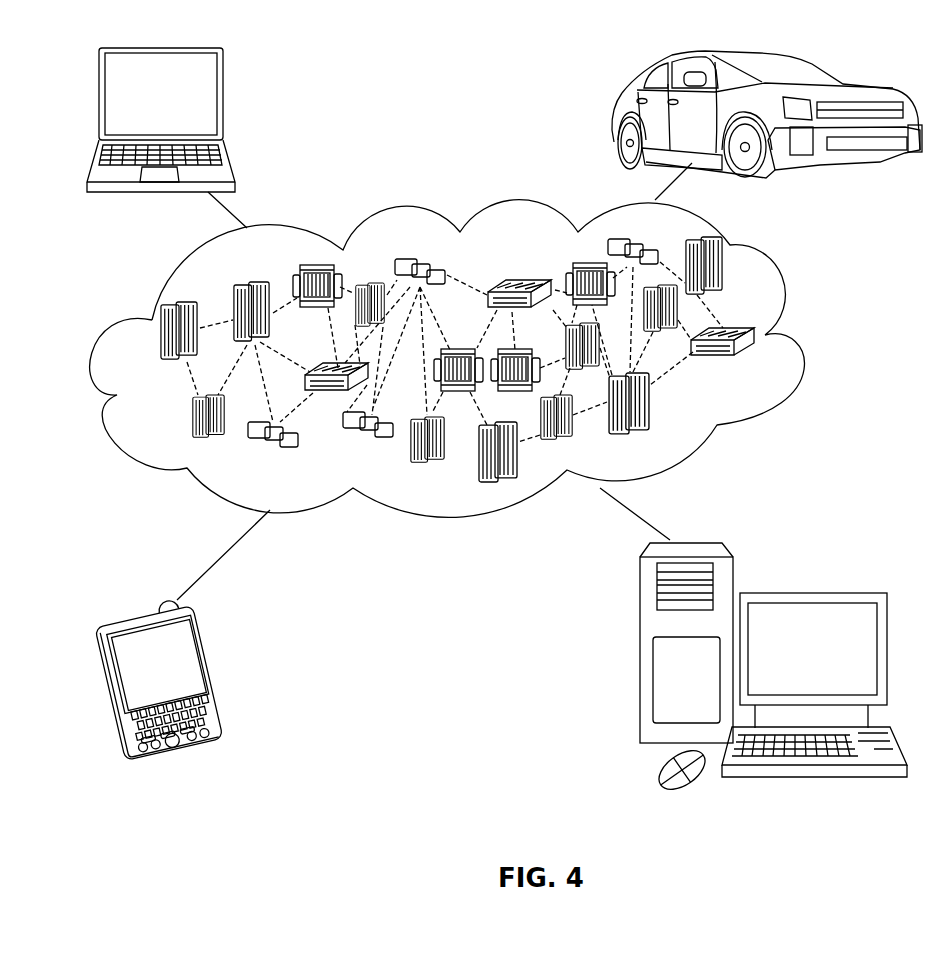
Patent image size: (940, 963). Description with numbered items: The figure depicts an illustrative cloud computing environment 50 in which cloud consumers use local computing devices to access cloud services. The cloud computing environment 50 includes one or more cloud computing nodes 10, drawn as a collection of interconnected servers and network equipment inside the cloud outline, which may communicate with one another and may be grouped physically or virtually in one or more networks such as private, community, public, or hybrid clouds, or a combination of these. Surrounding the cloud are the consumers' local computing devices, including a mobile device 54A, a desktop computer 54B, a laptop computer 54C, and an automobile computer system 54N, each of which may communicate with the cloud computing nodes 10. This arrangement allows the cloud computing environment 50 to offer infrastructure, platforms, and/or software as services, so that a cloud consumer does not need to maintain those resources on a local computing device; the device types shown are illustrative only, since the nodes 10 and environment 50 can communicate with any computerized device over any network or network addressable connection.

The cloud computing node 10 is at (770, 372).
The cloud computing environment 50 is at (474, 359).
The mobile device 54A is at (212, 673).
The desktop computer 54B is at (810, 592).
The laptop computer 54C is at (223, 102).
The automobile computer system 54N is at (612, 115).